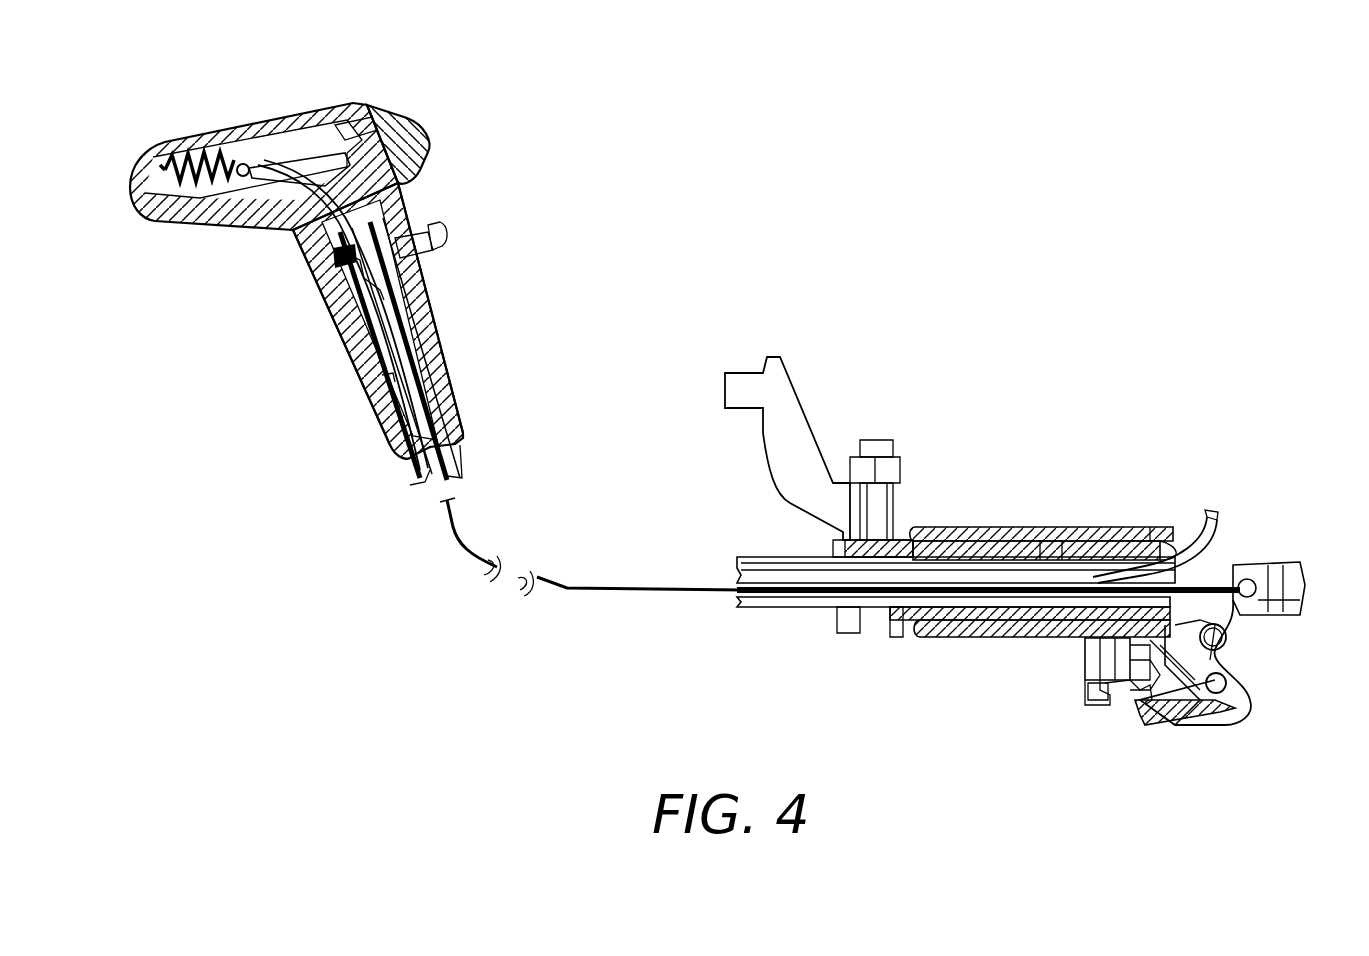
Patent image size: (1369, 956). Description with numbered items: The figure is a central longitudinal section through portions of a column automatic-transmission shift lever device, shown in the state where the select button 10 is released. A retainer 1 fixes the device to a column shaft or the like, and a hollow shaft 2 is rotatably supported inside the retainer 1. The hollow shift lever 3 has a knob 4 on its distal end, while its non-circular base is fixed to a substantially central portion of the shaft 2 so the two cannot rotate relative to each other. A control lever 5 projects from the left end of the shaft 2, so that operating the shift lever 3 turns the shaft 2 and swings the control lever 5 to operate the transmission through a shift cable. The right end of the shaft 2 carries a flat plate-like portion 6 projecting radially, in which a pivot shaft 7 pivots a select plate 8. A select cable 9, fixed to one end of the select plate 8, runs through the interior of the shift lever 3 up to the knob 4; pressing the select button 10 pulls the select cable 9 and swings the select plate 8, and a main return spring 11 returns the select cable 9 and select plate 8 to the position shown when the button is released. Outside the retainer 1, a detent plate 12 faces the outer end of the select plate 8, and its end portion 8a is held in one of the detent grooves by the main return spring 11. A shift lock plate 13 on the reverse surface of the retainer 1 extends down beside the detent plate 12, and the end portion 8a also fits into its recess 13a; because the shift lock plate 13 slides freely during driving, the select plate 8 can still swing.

The retainer 1 is at (983, 527).
The shaft 2 is at (1035, 545).
The shift lever 3 is at (767, 600).
The knob 4 is at (430, 327).
The control lever 5 is at (780, 410).
The flat plate-like portion 6 is at (1155, 720).
The pivot shaft 7 is at (1240, 680).
The select plate 8 is at (1255, 655).
The end portion 8a is at (1100, 688).
The select cable 9 is at (651, 590).
The select button 10 is at (418, 143).
The main return spring 11 is at (1282, 632).
The detent plate 12 is at (1133, 683).
The shift lock plate 13 is at (1100, 650).
The recess 13a is at (1100, 690).